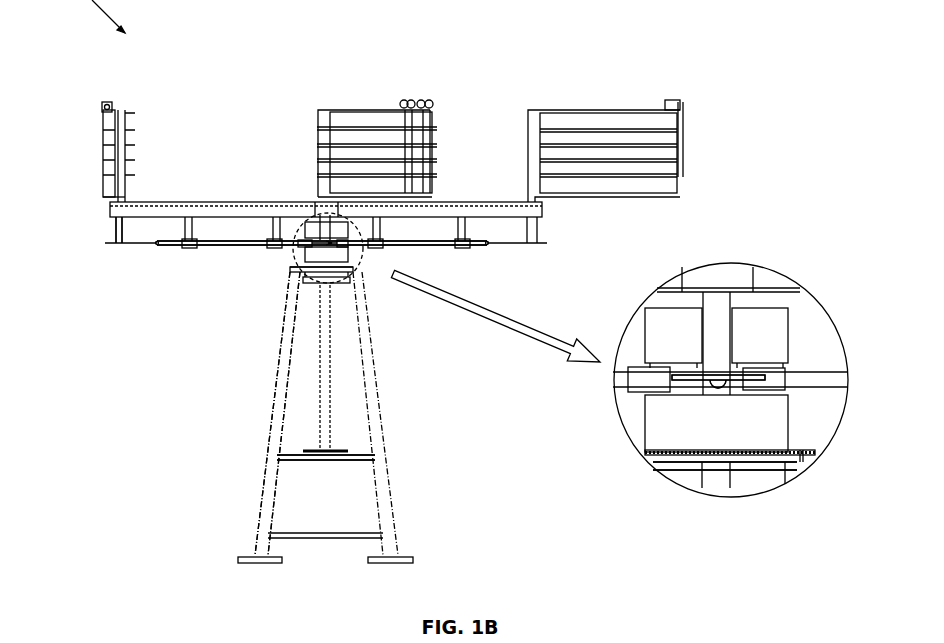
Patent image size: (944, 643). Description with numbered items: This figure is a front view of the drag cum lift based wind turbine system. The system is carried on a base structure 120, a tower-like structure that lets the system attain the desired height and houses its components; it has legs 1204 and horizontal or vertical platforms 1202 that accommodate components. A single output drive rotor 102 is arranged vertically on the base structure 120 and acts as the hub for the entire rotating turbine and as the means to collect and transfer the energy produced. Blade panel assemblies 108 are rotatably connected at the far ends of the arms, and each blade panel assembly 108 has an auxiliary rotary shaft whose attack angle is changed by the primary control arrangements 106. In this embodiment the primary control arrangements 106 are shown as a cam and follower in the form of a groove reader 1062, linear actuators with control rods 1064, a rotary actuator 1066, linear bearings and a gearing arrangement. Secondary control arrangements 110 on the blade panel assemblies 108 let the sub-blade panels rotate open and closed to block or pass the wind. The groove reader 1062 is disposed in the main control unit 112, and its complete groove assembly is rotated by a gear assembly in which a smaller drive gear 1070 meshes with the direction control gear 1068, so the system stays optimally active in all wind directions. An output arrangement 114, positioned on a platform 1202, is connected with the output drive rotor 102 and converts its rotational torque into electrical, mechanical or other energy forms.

The output drive rotor 102 is at (327, 425).
The primary control arrangement 106 is at (102, 288).
The blade panel assembly 108 is at (82, 103).
The secondary control arrangement 110 is at (435, 145).
The main control unit 112 is at (755, 302).
The output arrangement 114 is at (333, 455).
The base structure 120 is at (388, 497).
The groove reader 1062 is at (735, 387).
The control rods 1064 is at (228, 245).
The rotary actuator 1066 is at (120, 245).
The direction control gear 1068 is at (723, 453).
The drive gear 1070 is at (813, 453).
The platform 1202 is at (360, 272).
The leg 1204 is at (282, 355).